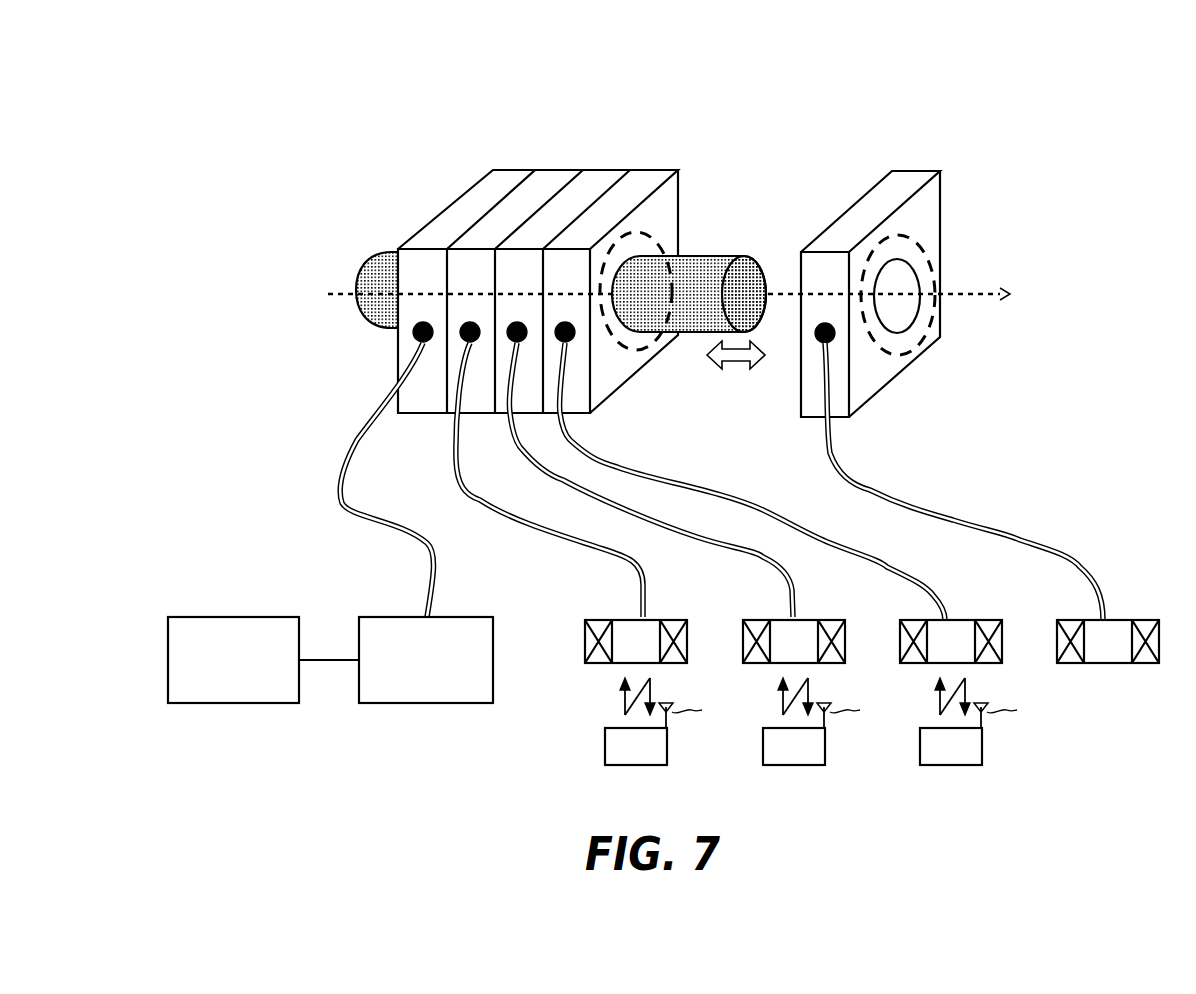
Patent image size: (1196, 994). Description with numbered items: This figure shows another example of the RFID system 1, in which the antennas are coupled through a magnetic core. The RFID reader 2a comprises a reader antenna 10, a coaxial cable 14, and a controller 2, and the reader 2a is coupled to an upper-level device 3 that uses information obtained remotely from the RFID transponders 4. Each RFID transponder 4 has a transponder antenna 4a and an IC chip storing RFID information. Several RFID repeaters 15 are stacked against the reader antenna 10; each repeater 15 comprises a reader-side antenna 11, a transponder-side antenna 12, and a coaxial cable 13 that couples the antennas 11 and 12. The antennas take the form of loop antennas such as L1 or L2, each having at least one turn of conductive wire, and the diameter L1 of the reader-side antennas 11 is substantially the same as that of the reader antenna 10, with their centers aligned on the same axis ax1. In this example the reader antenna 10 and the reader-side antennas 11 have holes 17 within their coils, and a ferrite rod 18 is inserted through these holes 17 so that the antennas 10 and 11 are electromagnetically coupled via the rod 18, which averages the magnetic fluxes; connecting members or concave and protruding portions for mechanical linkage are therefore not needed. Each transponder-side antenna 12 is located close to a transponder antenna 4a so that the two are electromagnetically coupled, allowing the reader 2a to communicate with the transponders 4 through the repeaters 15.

The RFID system 1 is at (1040, 89).
The controller 2 is at (404, 642).
The RFID reader 2a is at (329, 480).
The upper-level device 3 is at (233, 642).
The RFID transponder 4 is at (809, 761).
The transponder antenna 4a is at (833, 703).
The reader antenna 10 is at (466, 258).
The reader-side antenna 11 is at (783, 260).
The transponder-side antenna 12 is at (872, 537).
The coaxial cable 13 is at (788, 481).
The coaxial cable 14 is at (386, 480).
The RFID repeater 15 is at (867, 236).
The hole 17 is at (968, 290).
The ferrite rod 18 is at (715, 241).
The diameter of reader-side antenna L1 is at (814, 278).
The loop antenna L2 is at (935, 678).
The axis ax1 is at (692, 294).